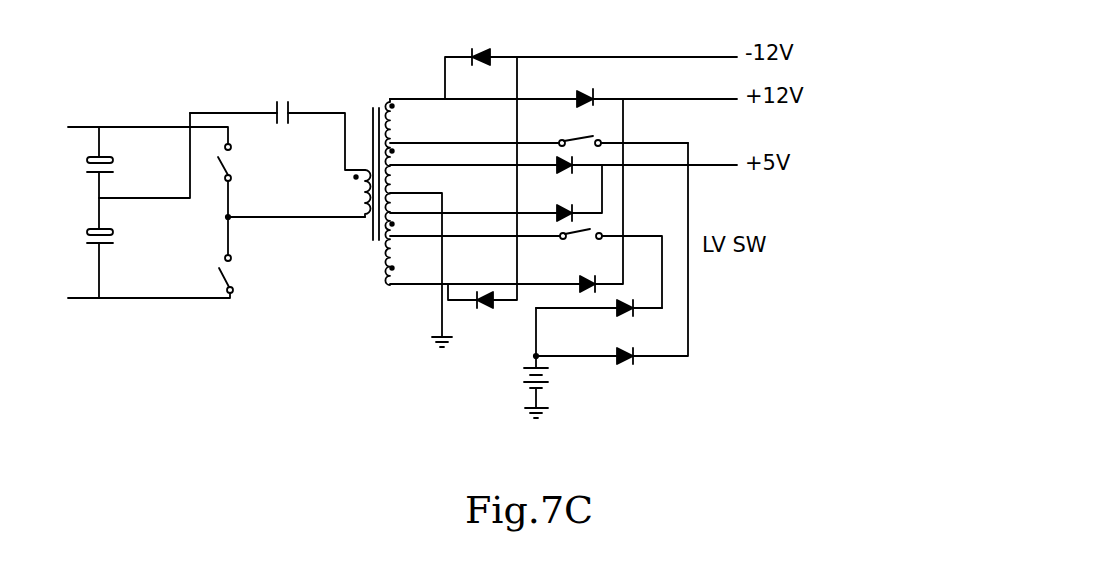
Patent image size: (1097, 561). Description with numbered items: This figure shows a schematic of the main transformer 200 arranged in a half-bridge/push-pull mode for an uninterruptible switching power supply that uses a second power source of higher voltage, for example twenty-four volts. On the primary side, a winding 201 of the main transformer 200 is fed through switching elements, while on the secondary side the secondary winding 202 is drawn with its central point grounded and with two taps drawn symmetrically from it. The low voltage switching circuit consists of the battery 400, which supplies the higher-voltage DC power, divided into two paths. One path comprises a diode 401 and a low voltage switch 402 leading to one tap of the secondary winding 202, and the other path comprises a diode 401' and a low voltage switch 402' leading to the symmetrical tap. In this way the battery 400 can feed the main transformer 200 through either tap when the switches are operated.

The main transformer 200 is at (378, 181).
The primary winding 201 is at (343, 210).
The secondary winding 202 is at (413, 192).
The battery 400 is at (510, 363).
The isolation diode 401 is at (599, 321).
The diode 401' is at (612, 267).
The low voltage switch 402 is at (526, 268).
The low voltage switch 402' is at (539, 128).